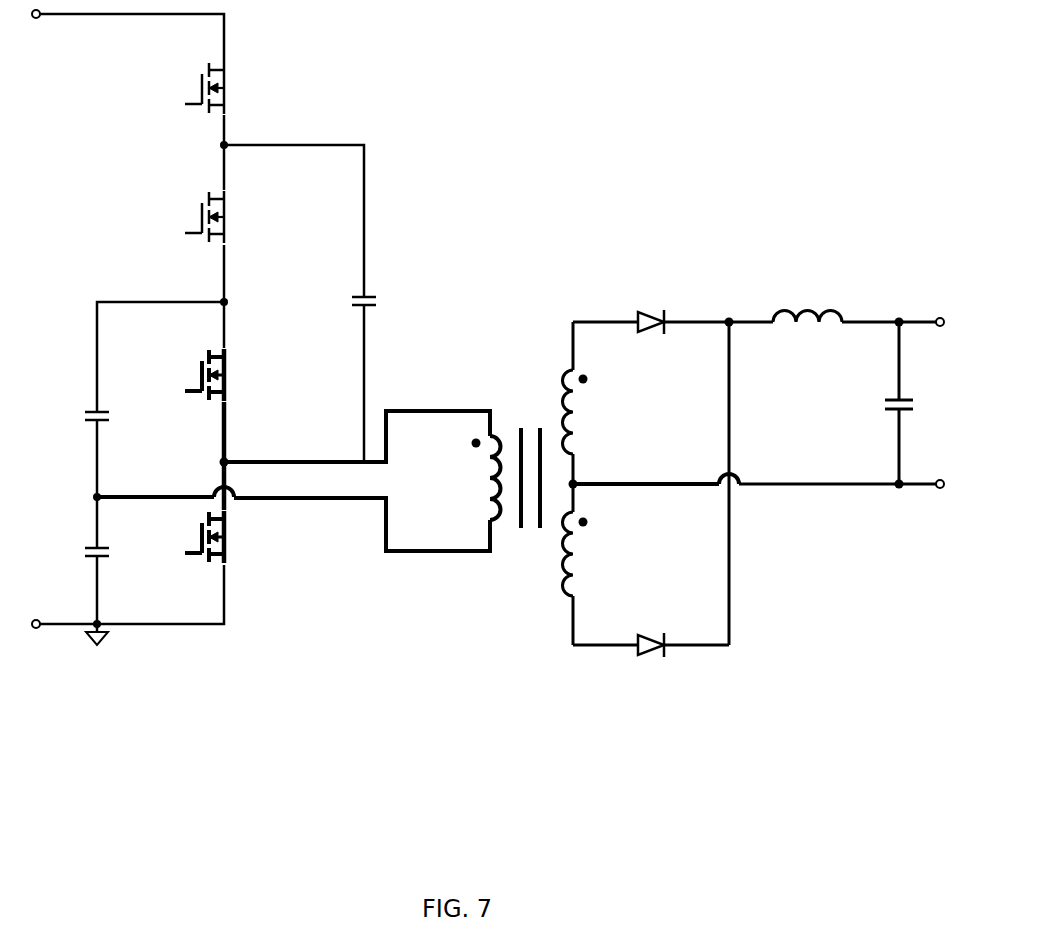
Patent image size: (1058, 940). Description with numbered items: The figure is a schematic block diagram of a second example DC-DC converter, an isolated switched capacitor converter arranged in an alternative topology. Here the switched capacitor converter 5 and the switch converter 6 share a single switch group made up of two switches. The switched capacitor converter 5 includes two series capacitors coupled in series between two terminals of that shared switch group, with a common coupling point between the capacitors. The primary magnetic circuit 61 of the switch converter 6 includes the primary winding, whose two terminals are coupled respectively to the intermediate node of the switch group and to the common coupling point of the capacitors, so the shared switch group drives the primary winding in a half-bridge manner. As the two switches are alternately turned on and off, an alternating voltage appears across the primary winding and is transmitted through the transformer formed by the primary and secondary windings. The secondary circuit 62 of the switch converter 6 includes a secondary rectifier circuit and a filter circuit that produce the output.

The switched capacitor converter 5 is at (334, 80).
The switch converter 6 is at (587, 275).
The primary magnetic circuit 61 is at (475, 568).
The secondary circuit 62 is at (726, 662).